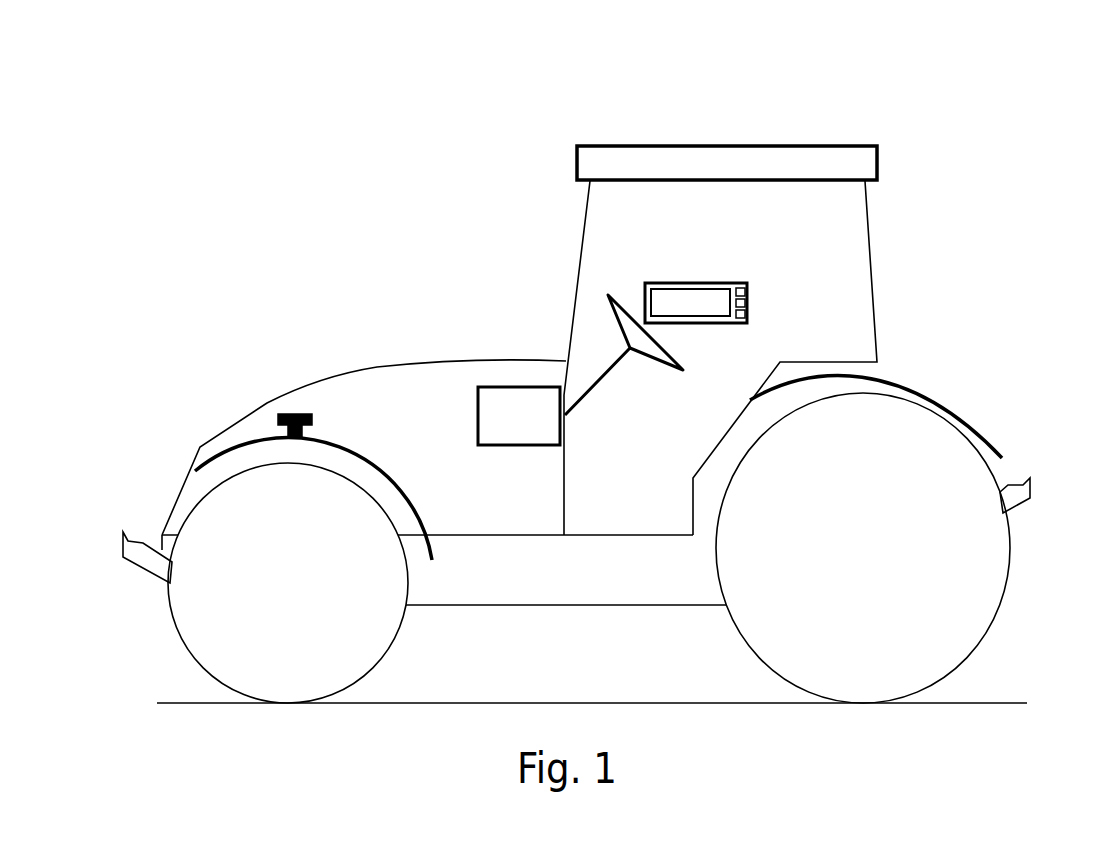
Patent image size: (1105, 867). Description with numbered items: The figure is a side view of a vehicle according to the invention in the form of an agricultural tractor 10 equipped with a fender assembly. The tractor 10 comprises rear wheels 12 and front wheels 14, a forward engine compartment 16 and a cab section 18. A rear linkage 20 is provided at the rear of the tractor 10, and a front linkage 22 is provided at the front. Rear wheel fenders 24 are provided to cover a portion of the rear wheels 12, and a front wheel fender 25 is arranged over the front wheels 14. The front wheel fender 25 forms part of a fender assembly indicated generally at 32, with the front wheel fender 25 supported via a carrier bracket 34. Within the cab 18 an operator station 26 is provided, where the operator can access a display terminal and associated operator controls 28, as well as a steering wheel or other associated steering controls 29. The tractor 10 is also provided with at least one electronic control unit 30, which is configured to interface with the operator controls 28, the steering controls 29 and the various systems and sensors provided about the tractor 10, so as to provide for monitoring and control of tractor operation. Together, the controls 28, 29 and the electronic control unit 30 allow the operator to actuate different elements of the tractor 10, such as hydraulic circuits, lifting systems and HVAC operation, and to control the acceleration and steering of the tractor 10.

The agricultural tractor 10 is at (243, 177).
The rear wheels 12 is at (892, 662).
The front wheels 14 is at (278, 683).
The forward engine compartment 16 is at (373, 383).
The cab section 18 is at (827, 247).
The rear linkage 20 is at (1017, 495).
The front linkage 22 is at (147, 560).
The rear wheel fenders 24 is at (943, 392).
The front wheel fender 25 is at (220, 458).
The operator station 26 is at (562, 273).
The display terminal and associated operator controls 28 is at (642, 285).
The steering wheel or associated steering controls 29 is at (600, 378).
The electronic control unit 30 is at (493, 400).
The fender assembly 32 is at (221, 385).
The carrier bracket 34 is at (290, 413).